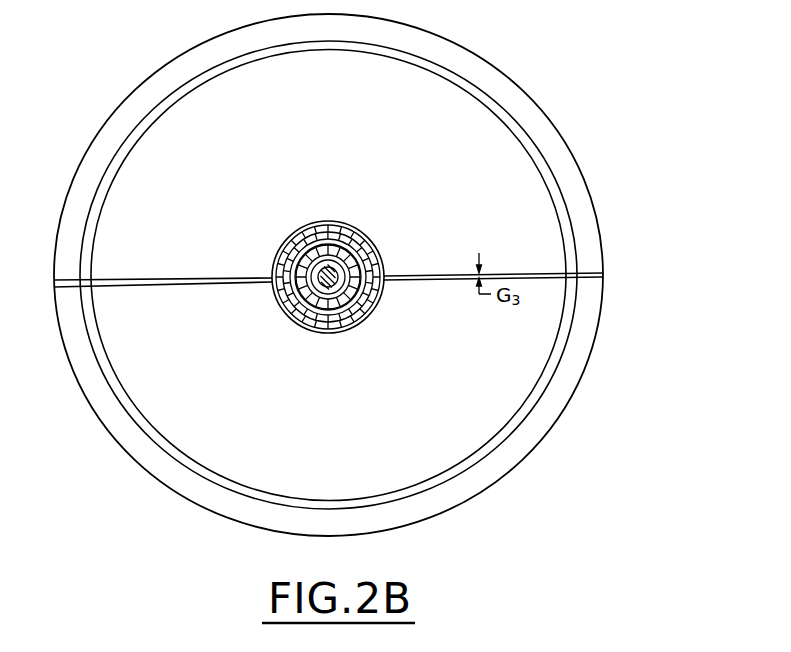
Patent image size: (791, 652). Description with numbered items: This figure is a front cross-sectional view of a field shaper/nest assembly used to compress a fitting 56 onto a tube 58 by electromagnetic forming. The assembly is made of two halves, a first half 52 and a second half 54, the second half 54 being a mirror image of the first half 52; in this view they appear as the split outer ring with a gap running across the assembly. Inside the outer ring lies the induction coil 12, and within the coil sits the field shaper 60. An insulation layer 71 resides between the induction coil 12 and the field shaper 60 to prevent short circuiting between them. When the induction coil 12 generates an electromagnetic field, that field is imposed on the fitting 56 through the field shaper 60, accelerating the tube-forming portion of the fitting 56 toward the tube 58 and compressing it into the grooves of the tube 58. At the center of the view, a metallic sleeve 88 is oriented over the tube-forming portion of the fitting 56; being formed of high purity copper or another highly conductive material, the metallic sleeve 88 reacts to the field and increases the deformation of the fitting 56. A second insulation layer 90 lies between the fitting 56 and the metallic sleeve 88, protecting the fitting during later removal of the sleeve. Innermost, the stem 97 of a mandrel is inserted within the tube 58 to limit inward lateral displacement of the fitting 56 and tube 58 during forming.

The induction coil 12 is at (505, 72).
The first half 52 is at (602, 317).
The second half 54 is at (560, 133).
The fitting 56 is at (373, 292).
The tube 58 is at (325, 290).
The field shaper 60 is at (437, 70).
The insulation layer 71 is at (518, 120).
The metallic sleeve 88 is at (360, 238).
The second insulation layer 90 is at (356, 262).
The stem 97 is at (312, 280).